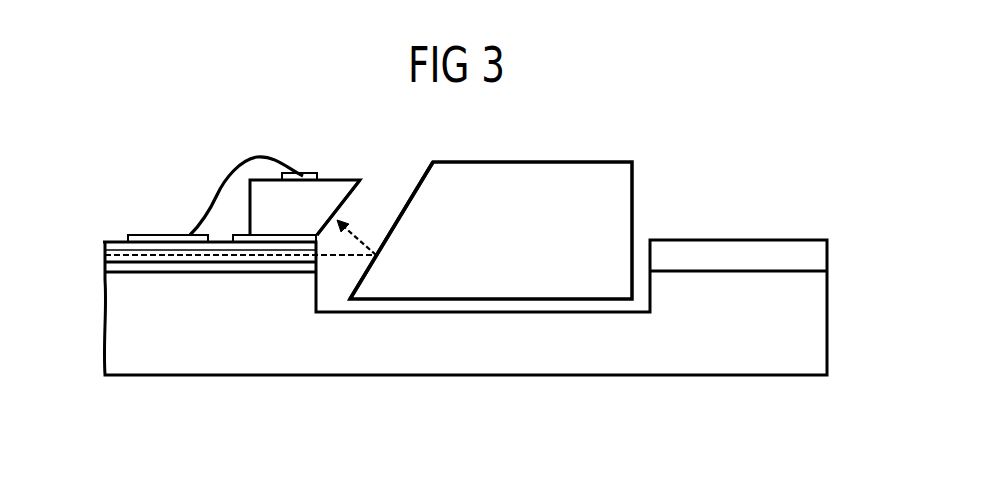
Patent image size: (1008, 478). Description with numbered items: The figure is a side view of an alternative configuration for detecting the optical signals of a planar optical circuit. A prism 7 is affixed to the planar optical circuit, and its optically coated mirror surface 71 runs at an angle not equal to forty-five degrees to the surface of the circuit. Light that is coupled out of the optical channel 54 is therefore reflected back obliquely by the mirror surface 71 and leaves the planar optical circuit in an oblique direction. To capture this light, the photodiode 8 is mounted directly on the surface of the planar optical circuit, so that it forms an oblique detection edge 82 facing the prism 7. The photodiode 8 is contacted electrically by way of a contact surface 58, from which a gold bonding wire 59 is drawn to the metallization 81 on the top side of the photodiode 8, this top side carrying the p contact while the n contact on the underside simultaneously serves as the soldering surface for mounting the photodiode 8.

The prism 7 is at (491, 201).
The optically coated mirror surface 71 is at (410, 193).
The photodiode 8 is at (323, 169).
The metallization of the photodiode 81 is at (303, 173).
The oblique detection edge 82 is at (351, 206).
The optical channel 54 is at (105, 258).
The contact surface 58 is at (138, 235).
The bonding wire 59 is at (220, 185).